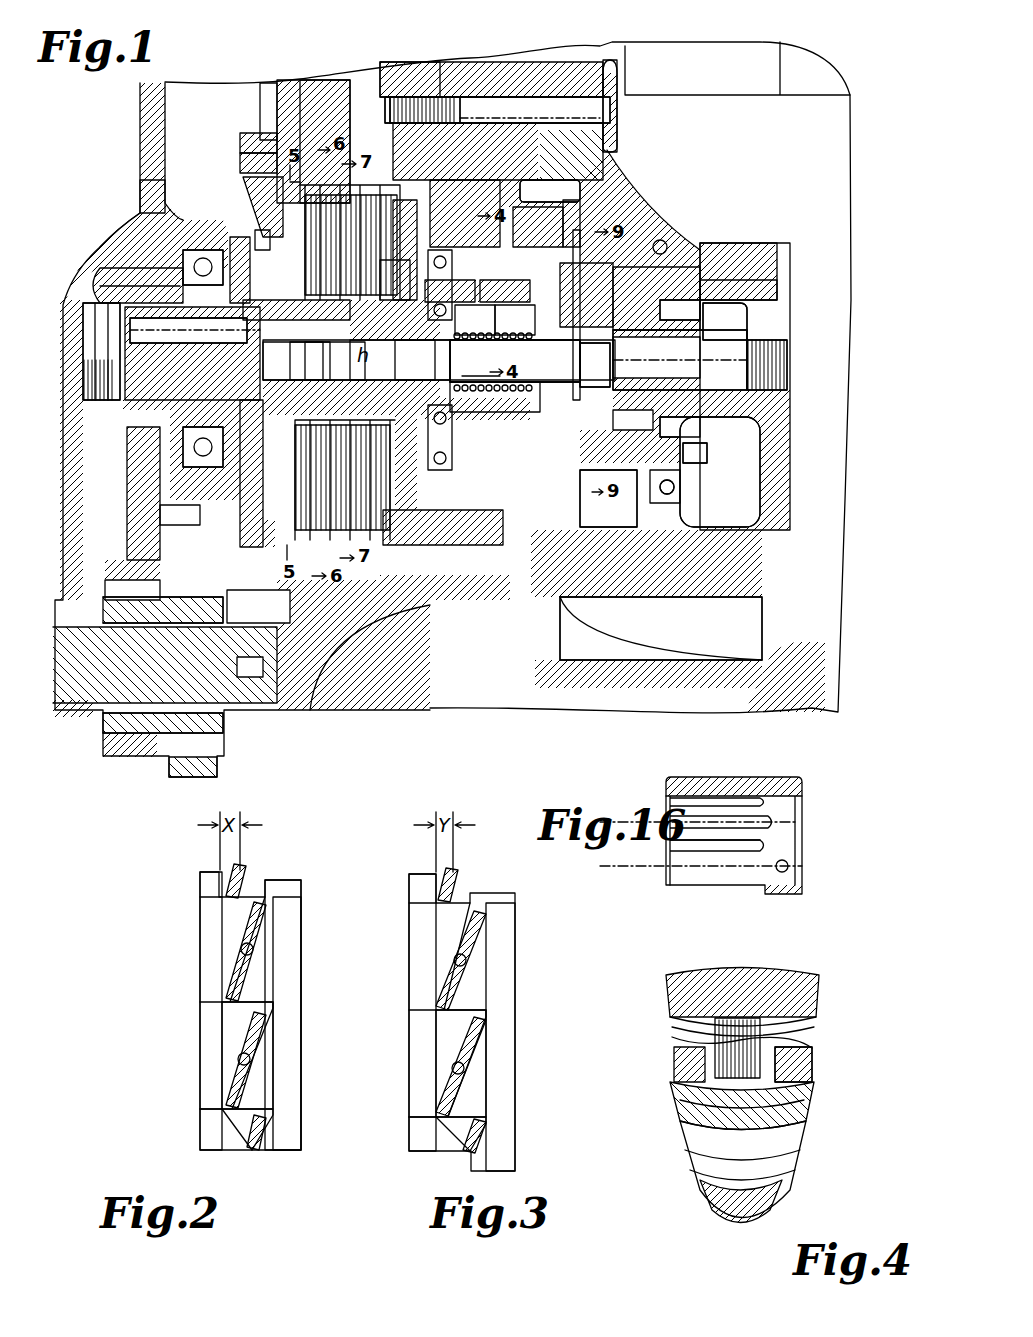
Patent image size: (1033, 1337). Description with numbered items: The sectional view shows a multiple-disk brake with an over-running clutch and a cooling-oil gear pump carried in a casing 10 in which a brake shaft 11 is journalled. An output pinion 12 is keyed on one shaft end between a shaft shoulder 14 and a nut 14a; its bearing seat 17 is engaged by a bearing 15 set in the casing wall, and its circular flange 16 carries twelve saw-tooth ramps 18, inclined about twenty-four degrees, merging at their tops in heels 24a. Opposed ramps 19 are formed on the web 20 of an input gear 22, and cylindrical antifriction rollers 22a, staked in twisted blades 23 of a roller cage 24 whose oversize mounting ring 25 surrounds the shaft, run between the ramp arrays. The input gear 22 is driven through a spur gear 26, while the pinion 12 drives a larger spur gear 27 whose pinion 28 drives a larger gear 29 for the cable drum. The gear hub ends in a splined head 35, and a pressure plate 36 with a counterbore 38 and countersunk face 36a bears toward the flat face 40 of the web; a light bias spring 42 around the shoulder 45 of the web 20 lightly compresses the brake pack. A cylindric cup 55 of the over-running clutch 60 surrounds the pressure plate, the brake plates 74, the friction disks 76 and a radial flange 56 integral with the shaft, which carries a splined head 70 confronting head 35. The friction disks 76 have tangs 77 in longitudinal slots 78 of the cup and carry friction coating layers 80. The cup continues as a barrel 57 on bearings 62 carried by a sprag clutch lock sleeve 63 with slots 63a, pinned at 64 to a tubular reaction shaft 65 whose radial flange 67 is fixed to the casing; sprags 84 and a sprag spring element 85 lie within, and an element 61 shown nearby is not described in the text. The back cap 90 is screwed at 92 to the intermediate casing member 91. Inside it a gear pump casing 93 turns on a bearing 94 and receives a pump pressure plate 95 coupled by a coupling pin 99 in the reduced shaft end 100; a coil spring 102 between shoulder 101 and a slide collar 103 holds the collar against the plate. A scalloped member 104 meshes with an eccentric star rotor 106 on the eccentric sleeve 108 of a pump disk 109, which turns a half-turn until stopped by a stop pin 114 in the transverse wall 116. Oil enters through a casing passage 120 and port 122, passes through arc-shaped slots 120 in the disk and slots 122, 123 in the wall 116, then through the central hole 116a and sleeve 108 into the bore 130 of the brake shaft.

In FIG. 1, the casing 10 is at (132, 209).
In FIG. 1, the brake shaft 11 is at (130, 356).
In FIG. 1, the output pinion 12 is at (100, 284).
In FIG. 2, the output pinion 12 is at (192, 1101).
In FIG. 3, the output pinion 12 is at (401, 1141).
In FIG. 1, the shaft shoulder 14 is at (230, 395).
In FIG. 1, the nut 14a is at (90, 376).
In FIG. 1, the bearing 15 is at (203, 260).
In FIG. 1, the circular flange 16 is at (140, 289).
In FIG. 2, the circular flange 16 is at (205, 1122).
In FIG. 3, the circular flange 16 is at (410, 1165).
In FIG. 4, the circular flange 16 is at (795, 1037).
In FIG. 1, the circular bearing seat 17 is at (135, 262).
In FIG. 2, the saw teeth or ramps 18 is at (238, 925).
In FIG. 3, the saw teeth or ramps 18 is at (462, 928).
In FIG. 2, the teeth or ramps 19 is at (260, 924).
In FIG. 3, the teeth or ramps 19 is at (470, 945).
In FIG. 1, the web 20 is at (258, 200).
In FIG. 2, the web 20 is at (305, 957).
In FIG. 3, the web 20 is at (518, 1002).
In FIG. 1, the input gear 22 is at (240, 162).
In FIG. 2, the input gear 22 is at (290, 884).
In FIG. 1, the antifriction rollers 22a is at (262, 238).
In FIG. 2, the antifriction rollers 22a is at (242, 950).
In FIG. 3, the antifriction rollers 22a is at (466, 960).
In FIG. 1, the twisted blades 23 is at (293, 361).
In FIG. 2, the twisted blades 23 is at (228, 992).
In FIG. 3, the twisted blades 23 is at (470, 985).
In FIG. 1, the roller cage 24 is at (222, 540).
In FIG. 2, the roller cage 24 is at (281, 1023).
In FIG. 3, the roller cage 24 is at (501, 1045).
In FIG. 2, the heels 24a is at (240, 1035).
In FIG. 3, the heels 24a is at (452, 1025).
In FIG. 1, the mounting ring 25 is at (195, 450).
In FIG. 1, the spur gear 26 is at (245, 140).
In FIG. 1, the larger spur gear 27 is at (127, 435).
In FIG. 1, the pinion 28 is at (224, 745).
In FIG. 1, the larger spur gear 29 is at (170, 775).
In FIG. 1, the splined head 35 is at (380, 270).
In FIG. 1, the pressure plate 36 is at (318, 185).
In FIG. 1, the countersunk face 36a is at (265, 296).
In FIG. 1, the counterbore 38 is at (258, 548).
In FIG. 1, the flat face 40 is at (295, 185).
In FIG. 1, the bias spring 42 is at (262, 318).
In FIG. 1, the coaxial shoulder 45 is at (310, 362).
In FIG. 1, the cylindric cup 55 is at (385, 185).
In FIG. 1, the radial flange 56 is at (438, 108).
In FIG. 1, the barrel 57 is at (497, 109).
In FIG. 4, the barrel 57 is at (708, 970).
In FIG. 1, the over-running clutch 60 is at (538, 225).
In FIG. 1, the cylinder 61 is at (465, 235).
In FIG. 1, the bearings 62 is at (550, 190).
In FIG. 1, the sprag clutch lock sleeve 63 is at (450, 290).
In FIG. 16, the sprag clutch lock sleeve 63 is at (746, 752).
In FIG. 4, the sprag clutch lock sleeve 63 is at (800, 1065).
In FIG. 16, the longitudinal slots 63a is at (672, 847).
In FIG. 1, the pin 64 is at (565, 285).
In FIG. 16, the pin 64 is at (810, 866).
In FIG. 1, the reaction shaft 65 is at (475, 320).
In FIG. 4, the reaction shaft 65 is at (680, 1124).
In FIG. 1, the radial flange 67 is at (582, 210).
In FIG. 1, the splined head 70 is at (415, 360).
In FIG. 1, the brake plates 74 is at (408, 250).
In FIG. 1, the friction disks 76 is at (398, 360).
In FIG. 1, the tangs 77 is at (330, 185).
In FIG. 1, the longitudinal slots 78 is at (405, 160).
In FIG. 1, the coating layers 80 is at (430, 530).
In FIG. 1, the sprags 84 is at (505, 290).
In FIG. 4, the sprags 84 is at (745, 1040).
In FIG. 4, the sprag spring element 85 is at (668, 1050).
In FIG. 1, the back cap 90 is at (740, 245).
In FIG. 1, the intermediate casing component member 91 is at (440, 160).
In FIG. 1, the screws 92 is at (500, 68).
In FIG. 1, the gear pump casing 93 is at (650, 180).
In FIG. 1, the bearing 94 is at (680, 215).
In FIG. 1, the pressure plate 95 is at (608, 498).
In FIG. 1, the coupling pin 99 is at (595, 365).
In FIG. 1, the reduced end portion 100 is at (515, 361).
In FIG. 1, the shaft shoulder 101 is at (505, 361).
In FIG. 1, the coil spring 102 is at (515, 320).
In FIG. 1, the slide collar 103 is at (540, 400).
In FIG. 1, the scalloped member 104 is at (760, 250).
In FIG. 1, the star-shaped rotor element 106 is at (690, 370).
In FIG. 1, the eccentric sleeve 108 is at (656, 357).
In FIG. 1, the pump disk 109 is at (695, 520).
In FIG. 1, the stop pin 114 is at (690, 480).
In FIG. 1, the transverse wall 116 is at (740, 320).
In FIG. 1, the central hole 116a is at (785, 358).
In FIG. 1, the arc-shaped slots 120 is at (661, 479).
In FIG. 1, the arc-shaped slot 122 is at (708, 440).
In FIG. 1, the arc-shaped slot 123 is at (755, 292).
In FIG. 1, the bore 130 is at (487, 373).